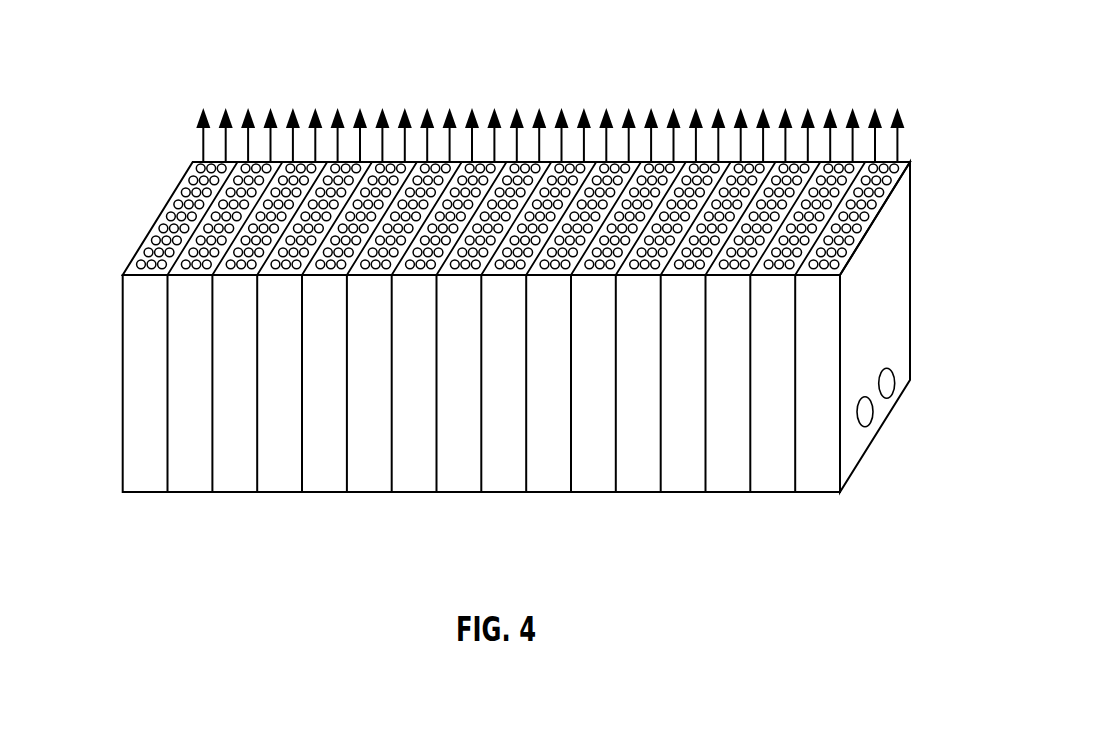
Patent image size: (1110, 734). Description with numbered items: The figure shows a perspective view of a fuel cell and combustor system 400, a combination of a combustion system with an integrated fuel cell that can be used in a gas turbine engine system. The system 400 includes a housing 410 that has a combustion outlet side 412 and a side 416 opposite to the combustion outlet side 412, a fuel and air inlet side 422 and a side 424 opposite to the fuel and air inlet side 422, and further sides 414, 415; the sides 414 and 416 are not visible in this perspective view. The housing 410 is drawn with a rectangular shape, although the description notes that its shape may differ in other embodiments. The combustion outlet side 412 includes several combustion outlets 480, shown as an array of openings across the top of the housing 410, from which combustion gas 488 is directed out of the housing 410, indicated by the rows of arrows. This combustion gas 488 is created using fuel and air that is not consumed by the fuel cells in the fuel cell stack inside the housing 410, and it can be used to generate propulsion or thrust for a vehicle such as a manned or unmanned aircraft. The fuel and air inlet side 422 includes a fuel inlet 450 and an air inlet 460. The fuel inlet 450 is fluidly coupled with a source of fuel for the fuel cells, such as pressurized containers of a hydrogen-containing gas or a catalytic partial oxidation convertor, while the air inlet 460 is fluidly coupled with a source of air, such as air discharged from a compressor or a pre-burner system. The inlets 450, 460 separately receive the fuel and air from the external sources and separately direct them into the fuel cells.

The fuel cell and combustor system 400 is at (516, 300).
The housing 410 is at (158, 216).
The combustion outlet side 412 is at (838, 162).
The side 414 is at (912, 200).
The side 415 is at (532, 453).
The side 416 is at (677, 497).
The fuel and air inlet side 422 is at (885, 290).
The side 424 is at (122, 420).
The fuel inlet 450 is at (866, 413).
The air inlet 460 is at (887, 385).
The combustion outlets 480 is at (520, 177).
The combustion gas 488 is at (202, 143).